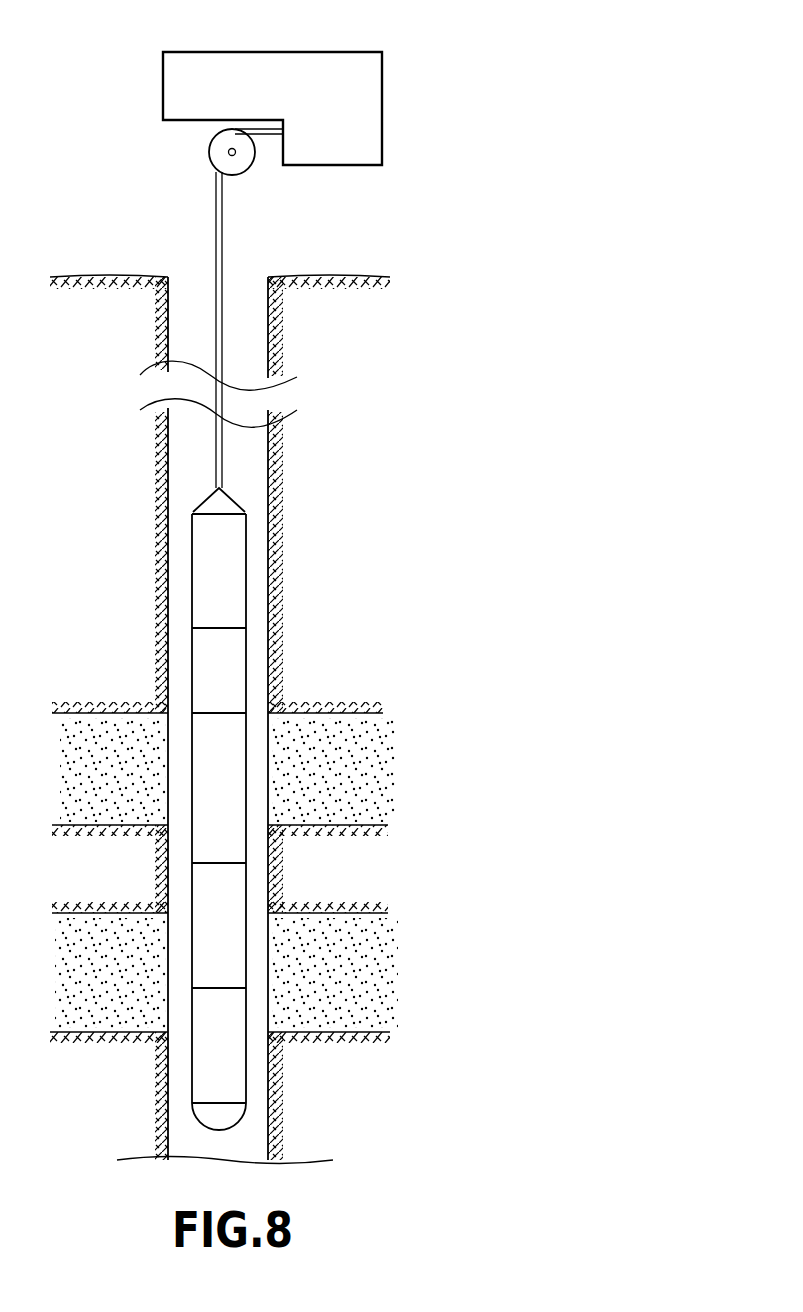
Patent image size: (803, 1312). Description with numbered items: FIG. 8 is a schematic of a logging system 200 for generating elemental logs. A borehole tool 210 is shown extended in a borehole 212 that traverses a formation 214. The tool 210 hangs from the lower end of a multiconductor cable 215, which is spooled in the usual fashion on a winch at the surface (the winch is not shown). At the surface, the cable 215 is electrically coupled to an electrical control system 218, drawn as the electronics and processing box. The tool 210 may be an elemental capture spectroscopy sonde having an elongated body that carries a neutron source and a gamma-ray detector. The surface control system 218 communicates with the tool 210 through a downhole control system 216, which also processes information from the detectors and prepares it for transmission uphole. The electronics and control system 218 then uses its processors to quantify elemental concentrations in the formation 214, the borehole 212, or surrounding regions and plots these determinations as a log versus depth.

The logging system 200 is at (183, 188).
The borehole tool 210 is at (275, 809).
The borehole 212 is at (264, 345).
The formation 214 is at (365, 785).
The multiconductor cable 215 is at (222, 228).
The downhole control system 216 is at (237, 685).
The electrical control system 218 is at (365, 52).